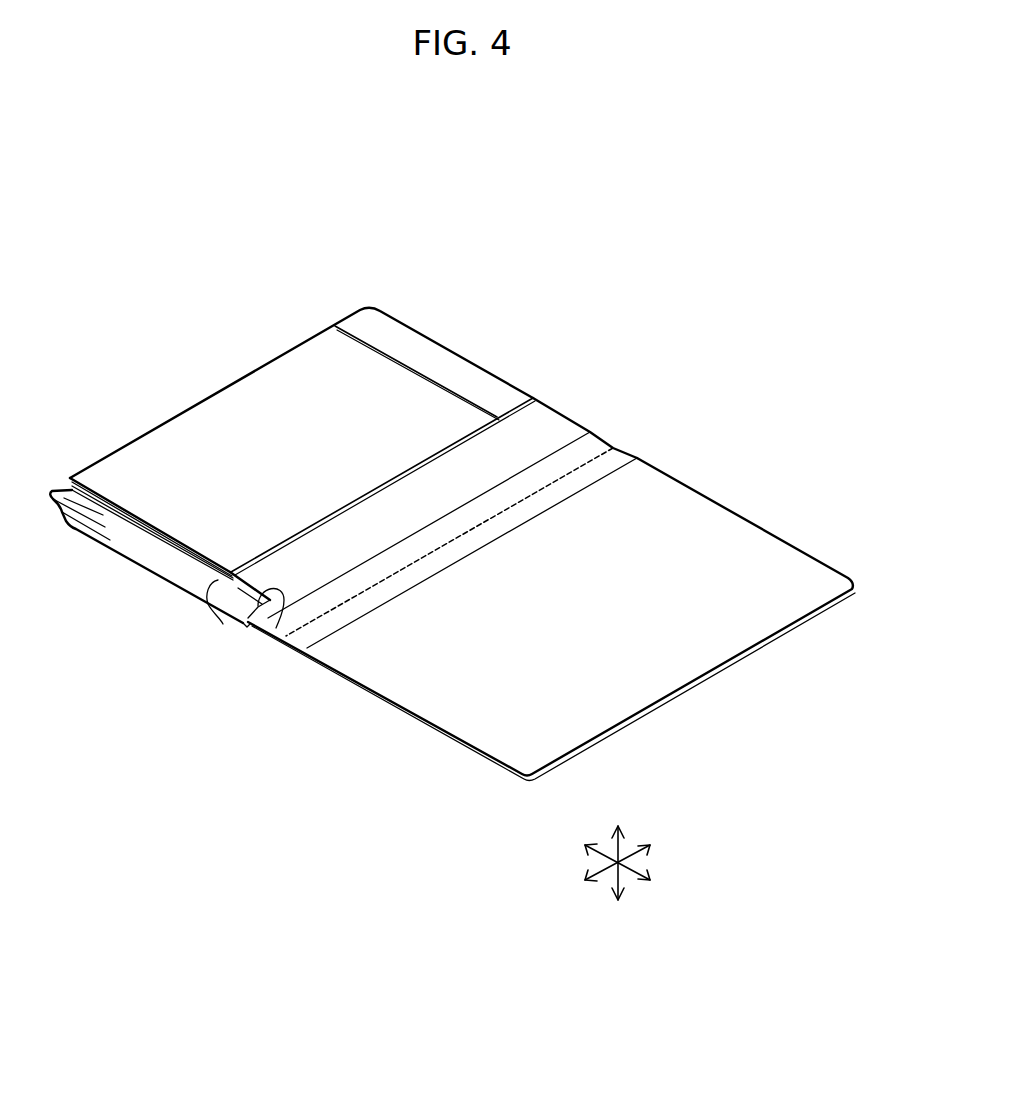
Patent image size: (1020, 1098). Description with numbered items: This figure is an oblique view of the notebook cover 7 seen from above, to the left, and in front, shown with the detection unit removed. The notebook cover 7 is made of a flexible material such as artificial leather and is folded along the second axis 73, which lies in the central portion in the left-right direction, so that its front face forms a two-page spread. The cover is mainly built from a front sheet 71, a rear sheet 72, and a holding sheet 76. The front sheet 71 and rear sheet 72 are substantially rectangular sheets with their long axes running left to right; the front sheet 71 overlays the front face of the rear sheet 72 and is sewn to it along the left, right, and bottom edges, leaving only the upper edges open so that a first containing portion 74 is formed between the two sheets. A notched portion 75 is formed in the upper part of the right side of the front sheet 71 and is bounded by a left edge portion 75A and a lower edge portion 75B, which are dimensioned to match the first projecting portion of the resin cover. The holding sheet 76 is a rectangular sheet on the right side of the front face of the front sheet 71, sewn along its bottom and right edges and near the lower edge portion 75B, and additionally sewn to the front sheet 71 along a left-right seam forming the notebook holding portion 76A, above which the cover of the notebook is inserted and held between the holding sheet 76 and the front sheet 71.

The notebook cover 7 is at (632, 330).
The front sheet 71 is at (570, 605).
The rear sheet 72 is at (150, 552).
The second axis 73 is at (462, 532).
The first containing portion 74 is at (117, 522).
The notched portion 75 is at (224, 626).
The left edge portion 75A is at (273, 629).
The lower edge portion 75B is at (238, 588).
The holding sheet 76 is at (297, 443).
The notebook holding portion 76A is at (398, 360).